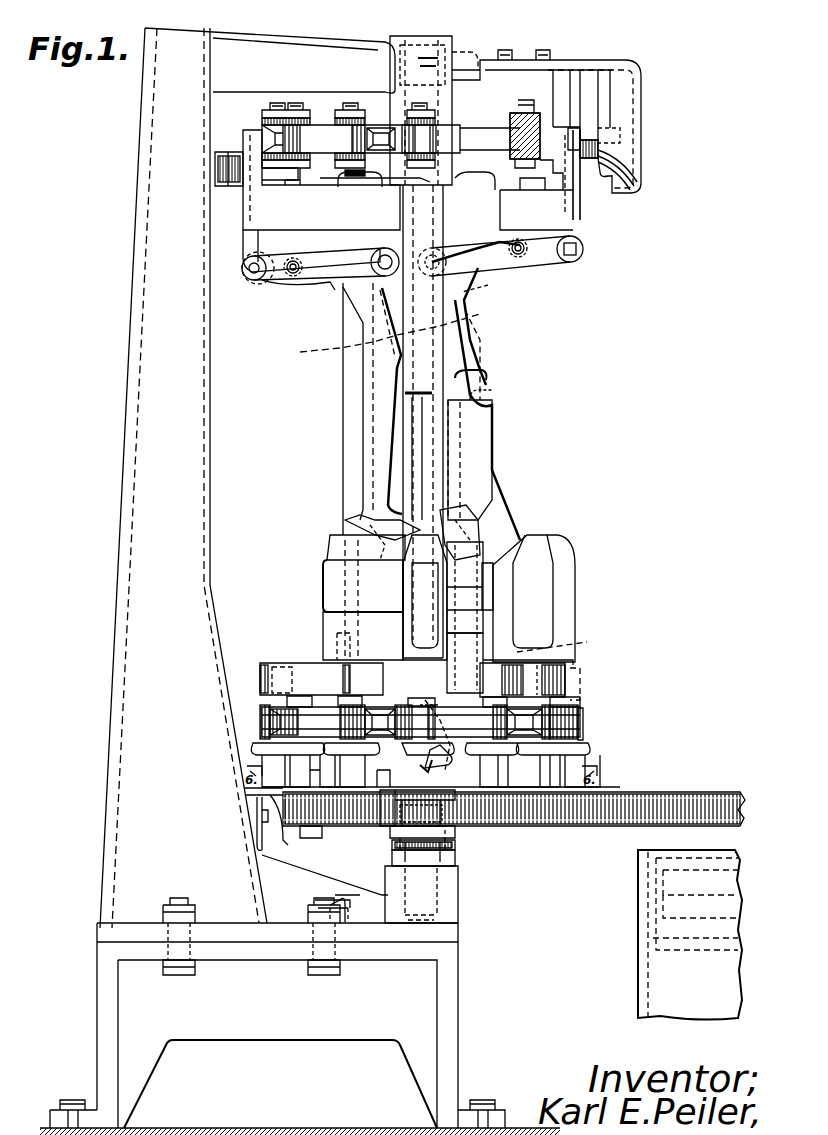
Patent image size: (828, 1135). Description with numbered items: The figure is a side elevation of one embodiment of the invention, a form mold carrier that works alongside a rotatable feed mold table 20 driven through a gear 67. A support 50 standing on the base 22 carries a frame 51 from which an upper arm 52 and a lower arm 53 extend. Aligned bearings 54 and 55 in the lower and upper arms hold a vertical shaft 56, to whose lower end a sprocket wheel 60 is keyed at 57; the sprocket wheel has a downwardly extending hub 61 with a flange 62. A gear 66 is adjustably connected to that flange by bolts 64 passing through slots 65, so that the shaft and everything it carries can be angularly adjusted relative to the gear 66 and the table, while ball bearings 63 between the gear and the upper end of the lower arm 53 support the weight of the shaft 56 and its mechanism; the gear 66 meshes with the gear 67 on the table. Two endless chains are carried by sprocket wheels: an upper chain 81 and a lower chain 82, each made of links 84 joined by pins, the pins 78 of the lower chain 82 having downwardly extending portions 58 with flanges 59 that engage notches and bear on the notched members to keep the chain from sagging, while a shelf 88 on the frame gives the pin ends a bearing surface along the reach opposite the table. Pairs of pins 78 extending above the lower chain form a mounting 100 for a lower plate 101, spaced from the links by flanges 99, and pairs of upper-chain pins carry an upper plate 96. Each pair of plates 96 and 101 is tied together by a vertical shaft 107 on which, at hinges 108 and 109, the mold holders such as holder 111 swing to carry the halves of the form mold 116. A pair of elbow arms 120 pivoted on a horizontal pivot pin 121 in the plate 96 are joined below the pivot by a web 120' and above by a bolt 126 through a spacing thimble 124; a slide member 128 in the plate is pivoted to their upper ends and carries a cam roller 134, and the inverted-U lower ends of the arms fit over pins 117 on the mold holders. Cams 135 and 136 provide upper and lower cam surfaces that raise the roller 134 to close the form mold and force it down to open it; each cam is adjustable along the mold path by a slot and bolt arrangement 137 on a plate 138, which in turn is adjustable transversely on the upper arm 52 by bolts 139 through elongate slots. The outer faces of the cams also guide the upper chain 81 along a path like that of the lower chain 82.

The feed mold table 20 is at (690, 794).
The base 22 is at (452, 1128).
The support 50 is at (450, 972).
The frame 51 is at (185, 438).
The upper arm 52 is at (305, 46).
The lower arm 53 is at (320, 884).
The bearing 54 is at (448, 884).
The bearing 55 is at (415, 42).
The vertical shaft 56 is at (418, 198).
The key 57 is at (437, 705).
The downwardly extending portion of pin 58 is at (610, 780).
The flange 59 is at (580, 752).
The sprocket wheel 60 is at (530, 720).
The hub portion 61 is at (448, 765).
The flange 62 is at (335, 832).
The ball bearings 63 is at (456, 858).
The bolts 64 is at (448, 836).
The slots 65 is at (393, 792).
The gear 66 is at (500, 830).
The gear 67 is at (655, 812).
The pins 78 is at (532, 135).
The chain 81 is at (315, 130).
The chain 82 is at (566, 722).
The links 84 is at (390, 702).
The shelf 88 is at (269, 825).
The plate 96 is at (606, 228).
The flanges 99 is at (552, 700).
The mounting 100 is at (556, 657).
The plate 101 is at (305, 665).
The vertical shaft 107 is at (470, 390).
The hinge 108 is at (500, 530).
The hinge 109 is at (512, 542).
The mold holder 111 is at (335, 578).
The form mold 116 is at (332, 620).
The pin 117 is at (372, 523).
The elbow arms 120 is at (415, 411).
The web 120' is at (390, 337).
The horizontal pivot pin 121 is at (472, 282).
The spacing thimble 124 is at (280, 278).
The bolt 126 is at (524, 254).
The slide member 128 is at (250, 240).
The cam roller 134 is at (228, 165).
The cam 135 is at (628, 194).
The cam 136 is at (620, 146).
The slot and bolt arrangement 137 is at (545, 52).
The plate 138 is at (504, 51).
The bolts 139 is at (452, 75).